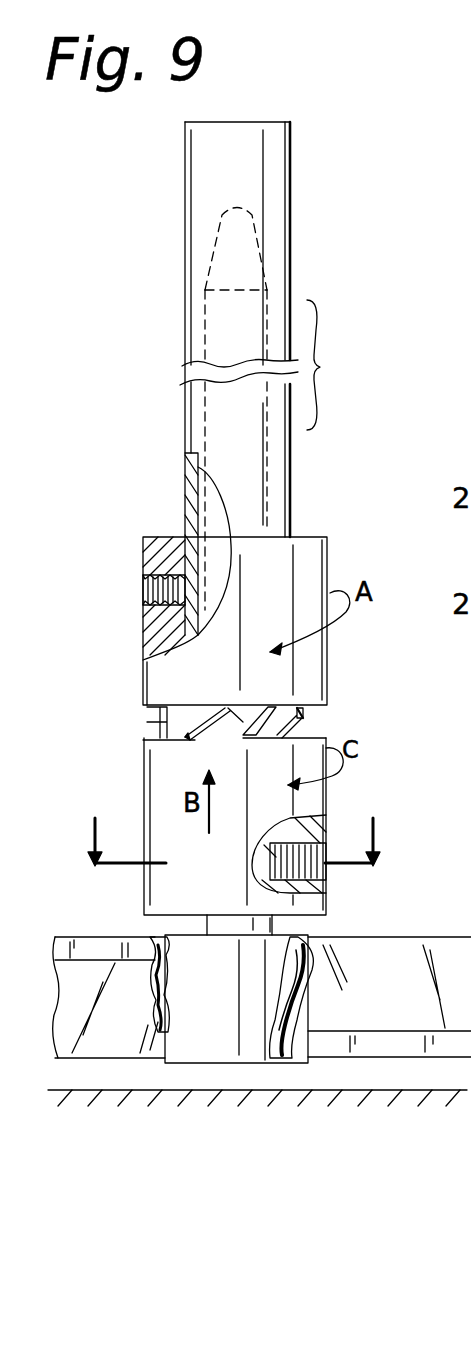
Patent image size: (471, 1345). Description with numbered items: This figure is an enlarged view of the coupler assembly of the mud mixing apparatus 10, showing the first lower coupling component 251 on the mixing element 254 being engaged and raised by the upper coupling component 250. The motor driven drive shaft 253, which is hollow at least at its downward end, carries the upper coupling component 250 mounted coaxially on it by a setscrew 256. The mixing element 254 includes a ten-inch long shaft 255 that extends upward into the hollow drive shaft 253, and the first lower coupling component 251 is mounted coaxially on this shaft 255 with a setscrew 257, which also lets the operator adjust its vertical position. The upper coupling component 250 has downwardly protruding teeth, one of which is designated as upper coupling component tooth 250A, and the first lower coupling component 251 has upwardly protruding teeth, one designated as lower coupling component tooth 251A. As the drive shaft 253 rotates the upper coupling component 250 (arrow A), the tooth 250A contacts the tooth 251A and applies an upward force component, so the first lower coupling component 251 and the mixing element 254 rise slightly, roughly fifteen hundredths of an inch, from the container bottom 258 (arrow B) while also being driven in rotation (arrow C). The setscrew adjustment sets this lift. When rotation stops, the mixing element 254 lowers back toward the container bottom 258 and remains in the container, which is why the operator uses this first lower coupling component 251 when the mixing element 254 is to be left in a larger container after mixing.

The drive shaft 253 is at (185, 153).
The shaft 255 is at (212, 223).
The upper coupling component 250 is at (143, 550).
The setscrew 256 is at (143, 587).
The lower coupling component tooth 251A is at (213, 704).
The upper coupling component tooth 250A is at (303, 718).
The first lower coupling component 251 is at (145, 752).
The setscrew 257 is at (325, 870).
The mixing element 254 is at (90, 937).
The container bottom 258 is at (128, 1092).
The mud mixing apparatus 10 is at (240, 820).